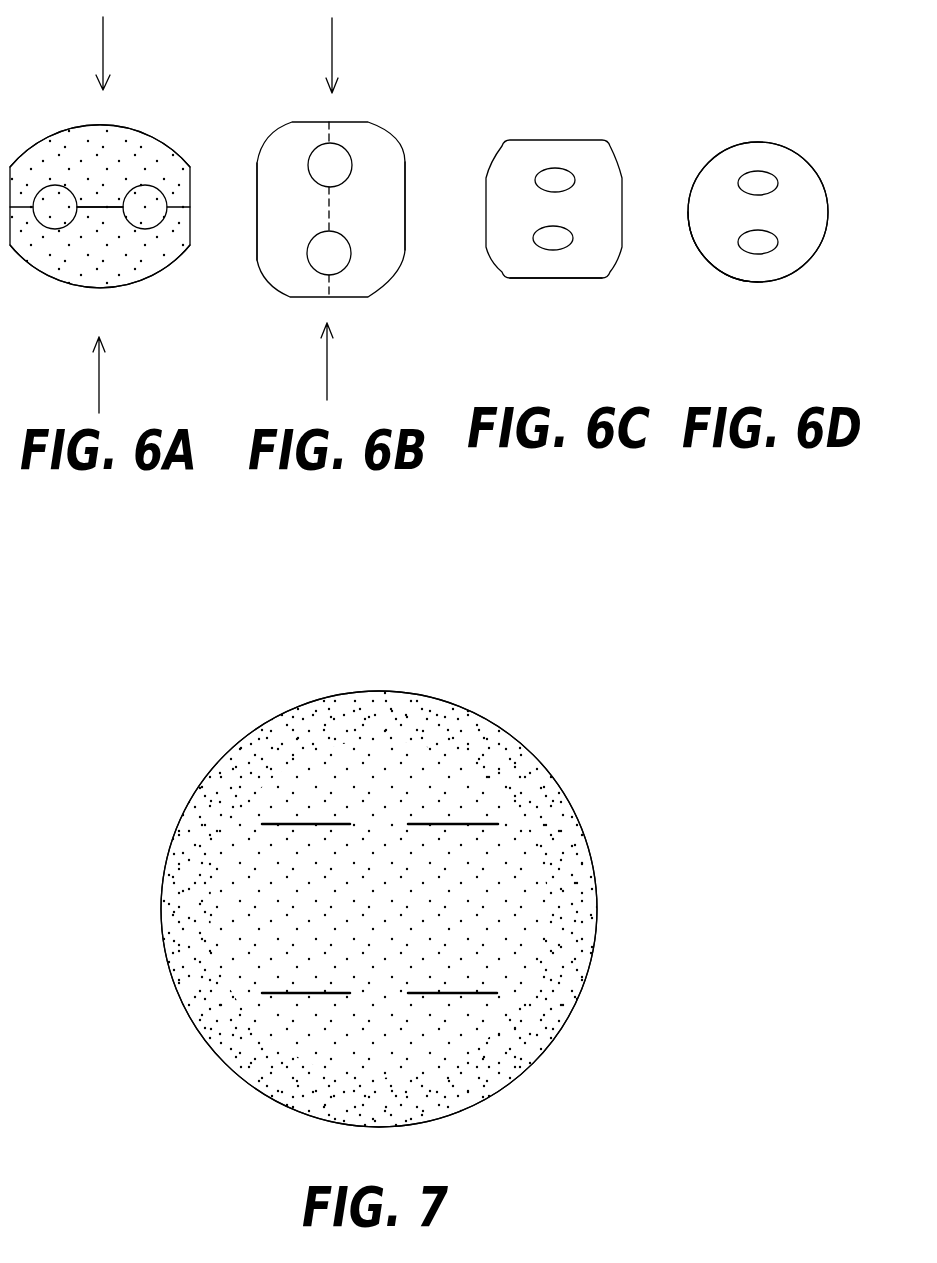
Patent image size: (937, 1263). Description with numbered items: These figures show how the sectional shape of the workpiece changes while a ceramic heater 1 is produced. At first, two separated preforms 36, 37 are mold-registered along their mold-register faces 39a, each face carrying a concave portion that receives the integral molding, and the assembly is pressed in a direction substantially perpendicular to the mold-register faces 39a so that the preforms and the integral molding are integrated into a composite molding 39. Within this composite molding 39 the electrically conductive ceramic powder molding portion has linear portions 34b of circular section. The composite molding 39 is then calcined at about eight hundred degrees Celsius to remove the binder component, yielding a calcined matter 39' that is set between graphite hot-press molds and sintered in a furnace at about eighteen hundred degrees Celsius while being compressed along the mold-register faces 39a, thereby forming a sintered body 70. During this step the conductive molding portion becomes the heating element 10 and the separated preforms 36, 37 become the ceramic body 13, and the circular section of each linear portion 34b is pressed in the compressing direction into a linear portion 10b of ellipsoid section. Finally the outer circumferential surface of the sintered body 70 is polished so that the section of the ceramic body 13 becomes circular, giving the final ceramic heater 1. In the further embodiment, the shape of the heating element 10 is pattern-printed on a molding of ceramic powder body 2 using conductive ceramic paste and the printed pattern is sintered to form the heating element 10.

In FIG. 6D, the ceramic heater 1 is at (762, 76).
In FIG. 7, the ceramic heater 1 is at (654, 805).
In FIG. 6D, the disc-shaped body 2 is at (715, 155).
In FIG. 7, the disc-shaped body 2 is at (598, 915).
In FIG. 7, the heating element 10 is at (597, 1077).
In FIG. 6C, the linear portions 10b is at (558, 248).
In FIG. 6D, the linear portions 10b is at (757, 247).
In FIG. 6C, the ceramic body 13 is at (497, 252).
In FIG. 6D, the ceramic body 13 is at (718, 250).
In FIG. 6C, the sintered body 70 is at (530, 140).
In FIG. 6A, the linear portions 34b is at (62, 230).
In FIG. 6B, the linear portions 34b is at (348, 240).
In FIG. 6A, the separated preform 36 is at (55, 147).
In FIG. 6B, the separated preform 36 is at (263, 243).
In FIG. 6A, the separated preform 37 is at (53, 268).
In FIG. 6B, the separated preform 37 is at (368, 273).
In FIG. 6A, the composite molding 39 is at (159, 211).
In FIG. 6B, the calcined matter 39' is at (387, 209).
In FIG. 6A, the mold-register face 39a is at (102, 205).
In FIG. 6B, the mold-register face 39a is at (328, 207).